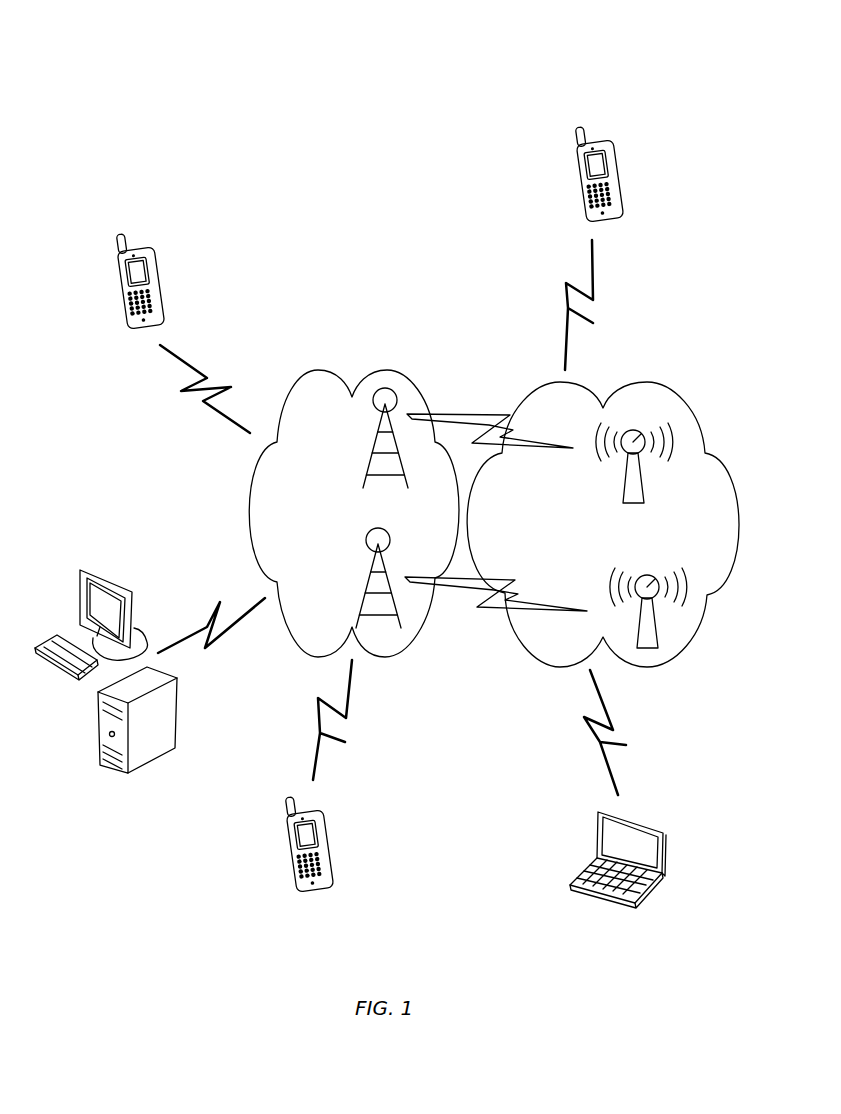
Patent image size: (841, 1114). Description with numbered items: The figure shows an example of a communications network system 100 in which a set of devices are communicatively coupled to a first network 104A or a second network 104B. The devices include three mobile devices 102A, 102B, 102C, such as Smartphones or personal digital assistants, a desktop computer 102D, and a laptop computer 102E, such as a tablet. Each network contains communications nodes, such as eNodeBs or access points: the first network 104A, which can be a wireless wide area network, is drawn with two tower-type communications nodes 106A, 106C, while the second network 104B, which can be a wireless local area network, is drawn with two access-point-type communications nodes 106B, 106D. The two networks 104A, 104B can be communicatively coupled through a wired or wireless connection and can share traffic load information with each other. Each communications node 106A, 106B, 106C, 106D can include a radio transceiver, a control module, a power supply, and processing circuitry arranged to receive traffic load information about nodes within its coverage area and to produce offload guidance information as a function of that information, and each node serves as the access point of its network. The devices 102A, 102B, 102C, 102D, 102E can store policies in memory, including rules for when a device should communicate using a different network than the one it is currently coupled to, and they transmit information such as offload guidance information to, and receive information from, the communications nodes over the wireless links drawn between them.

The communications network system 100 is at (130, 79).
The mobile device 102A is at (120, 275).
The mobile device 102B is at (579, 170).
The mobile device 102C is at (288, 832).
The desktop computer 102D is at (147, 603).
The laptop computer 102E is at (597, 858).
The first network 104A is at (405, 362).
The second network 104B is at (599, 378).
The communications node 106A is at (368, 590).
The communications node 106B is at (626, 450).
The communications node 106C is at (373, 450).
The communications node 106D is at (651, 576).